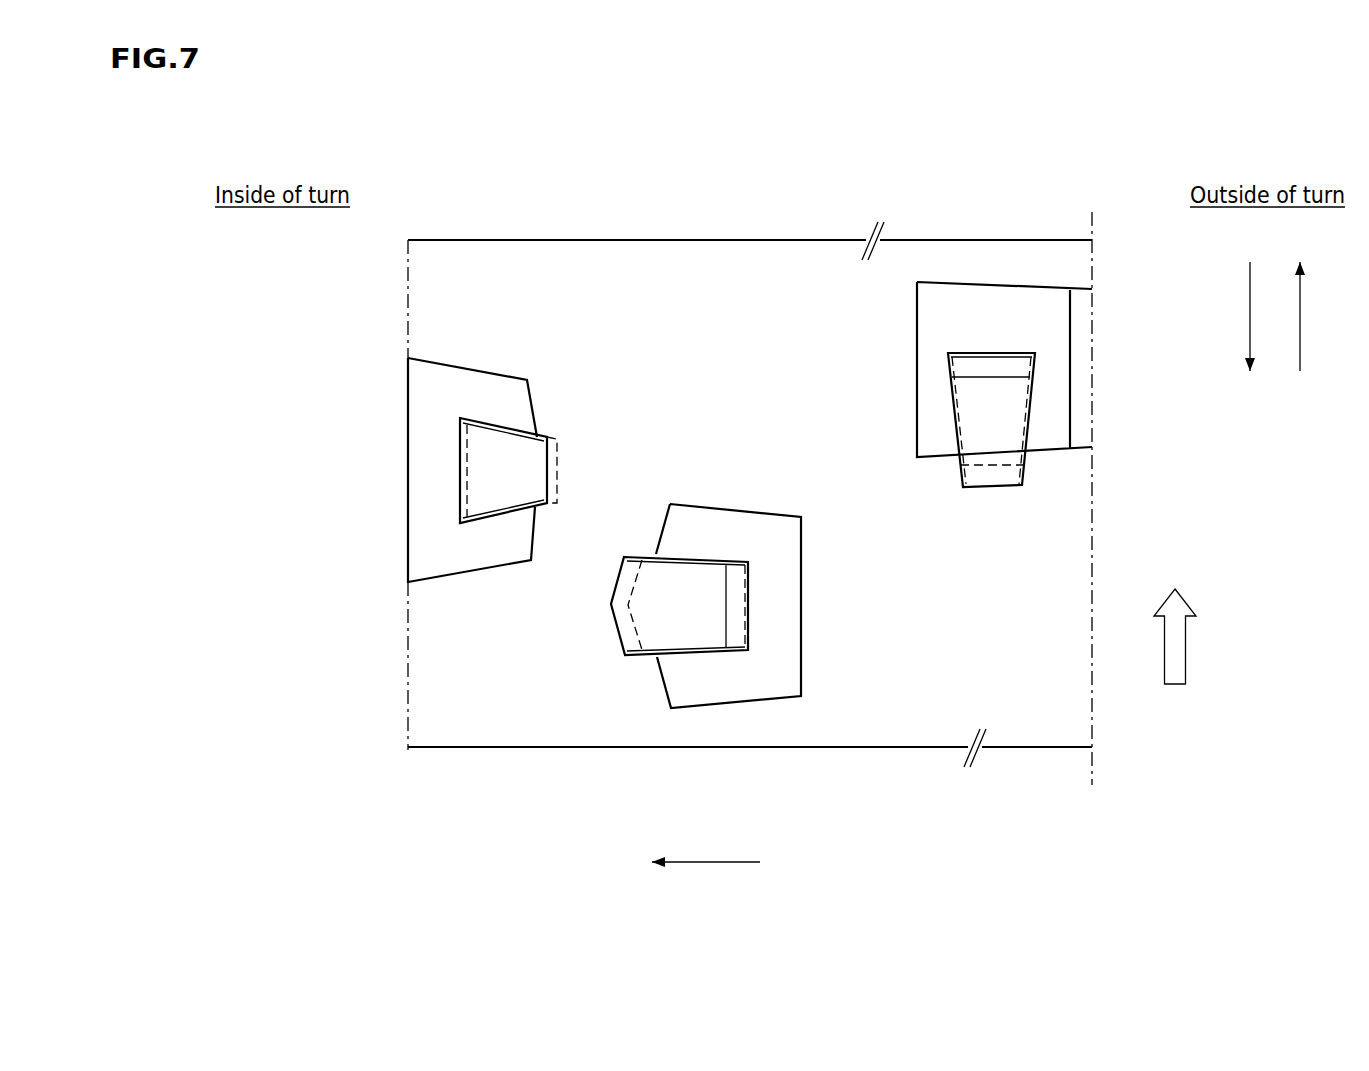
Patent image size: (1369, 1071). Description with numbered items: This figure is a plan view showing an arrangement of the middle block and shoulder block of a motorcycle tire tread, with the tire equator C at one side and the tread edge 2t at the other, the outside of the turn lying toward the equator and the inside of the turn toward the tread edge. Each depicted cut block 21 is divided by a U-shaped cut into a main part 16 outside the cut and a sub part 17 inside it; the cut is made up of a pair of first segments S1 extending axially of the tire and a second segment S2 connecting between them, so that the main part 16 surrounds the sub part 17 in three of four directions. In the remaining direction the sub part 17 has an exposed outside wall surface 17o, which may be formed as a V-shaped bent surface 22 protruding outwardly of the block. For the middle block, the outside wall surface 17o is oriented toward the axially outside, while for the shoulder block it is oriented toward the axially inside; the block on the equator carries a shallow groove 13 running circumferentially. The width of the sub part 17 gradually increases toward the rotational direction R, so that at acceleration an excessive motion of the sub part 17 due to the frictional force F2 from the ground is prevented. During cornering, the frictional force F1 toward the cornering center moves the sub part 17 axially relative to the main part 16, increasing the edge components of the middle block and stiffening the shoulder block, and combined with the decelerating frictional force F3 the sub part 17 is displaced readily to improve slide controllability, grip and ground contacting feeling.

The tread edge 2t is at (408, 303).
The shallow groove 13 is at (1070, 415).
The main part 16 is at (438, 387).
The sub part 17 is at (502, 465).
The outside wall surface 17o is at (553, 440).
The cut block 21 is at (750, 404).
The V-shaped bent surface 22 is at (558, 482).
The first segment S1 is at (487, 424).
The second segment S2 is at (468, 478).
The tire equator C is at (1094, 483).
The frictional force toward the cornering center F1 is at (725, 863).
The frictional force at acceleration F2 is at (1249, 330).
The frictional force during decelerating F3 is at (1303, 302).
The rotational direction R is at (1175, 653).